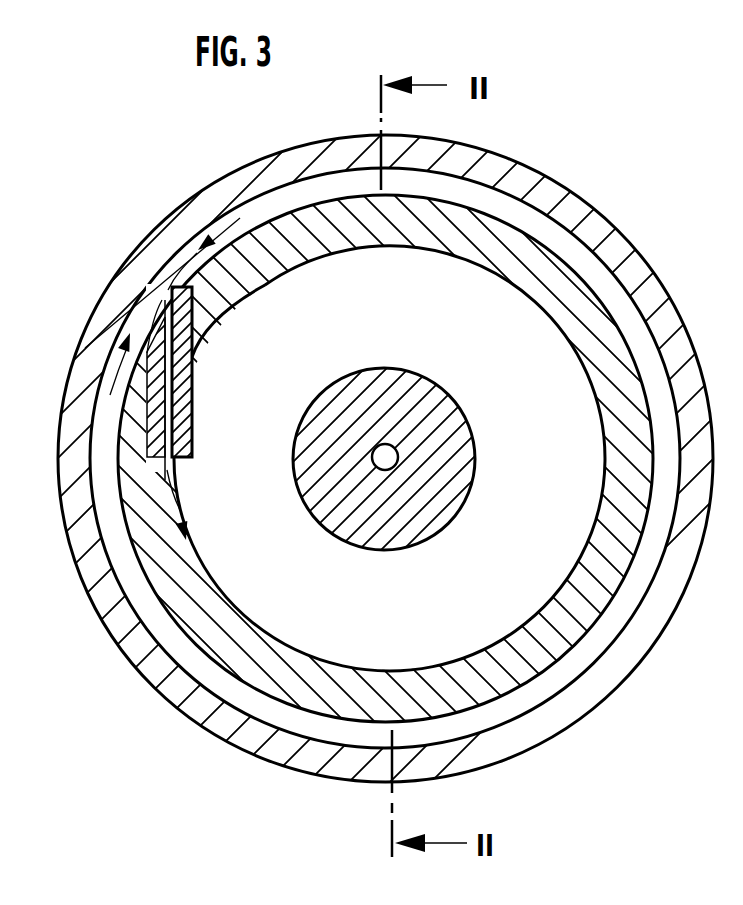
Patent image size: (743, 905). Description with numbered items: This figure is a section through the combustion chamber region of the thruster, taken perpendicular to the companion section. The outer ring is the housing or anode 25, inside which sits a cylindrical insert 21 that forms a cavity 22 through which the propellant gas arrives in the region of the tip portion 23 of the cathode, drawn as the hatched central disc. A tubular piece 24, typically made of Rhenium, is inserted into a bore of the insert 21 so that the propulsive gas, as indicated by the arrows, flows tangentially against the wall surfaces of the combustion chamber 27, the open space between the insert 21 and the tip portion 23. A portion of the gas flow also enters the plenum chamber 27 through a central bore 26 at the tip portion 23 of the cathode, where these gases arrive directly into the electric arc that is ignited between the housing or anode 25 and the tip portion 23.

The cylindrical insert 21 is at (596, 314).
The cavity 22 is at (572, 246).
The tip portion of the cathode 23 is at (408, 390).
The tubular piece 24 is at (185, 428).
The housing or anode 25 is at (248, 172).
The central bore 26 is at (397, 458).
The combustion chamber / plenum chamber 27 is at (297, 632).